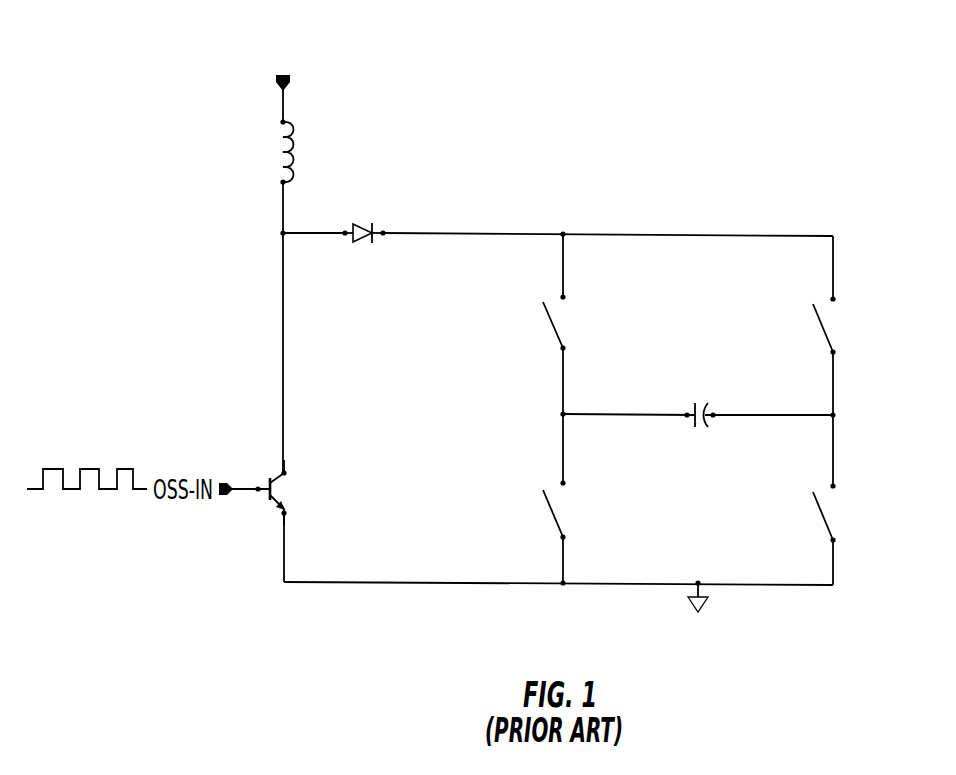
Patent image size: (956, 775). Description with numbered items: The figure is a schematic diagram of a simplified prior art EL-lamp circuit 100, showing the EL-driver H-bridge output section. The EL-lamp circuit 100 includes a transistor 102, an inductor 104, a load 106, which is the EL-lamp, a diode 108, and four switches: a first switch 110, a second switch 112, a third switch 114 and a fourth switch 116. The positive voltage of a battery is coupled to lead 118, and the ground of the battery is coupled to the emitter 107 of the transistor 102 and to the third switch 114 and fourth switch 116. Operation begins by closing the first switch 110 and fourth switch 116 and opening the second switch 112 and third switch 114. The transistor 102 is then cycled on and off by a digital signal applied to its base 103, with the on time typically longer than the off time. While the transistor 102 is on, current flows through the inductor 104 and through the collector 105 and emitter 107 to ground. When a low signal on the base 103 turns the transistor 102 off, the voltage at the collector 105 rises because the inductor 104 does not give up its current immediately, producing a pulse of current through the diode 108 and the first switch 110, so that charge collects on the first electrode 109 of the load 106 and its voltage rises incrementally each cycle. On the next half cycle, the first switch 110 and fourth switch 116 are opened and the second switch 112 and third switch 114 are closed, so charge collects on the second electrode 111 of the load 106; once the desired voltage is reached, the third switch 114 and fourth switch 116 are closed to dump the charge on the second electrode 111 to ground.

The EL-lamp circuit 100 is at (810, 152).
The transistor 102 is at (298, 468).
The base 103 is at (268, 480).
The inductor 104 is at (297, 158).
The collector 105 is at (281, 490).
The load 106 is at (701, 428).
The emitter 107 is at (277, 506).
The diode 108 is at (362, 224).
The first electrode 109 is at (690, 428).
The switch S1 110 is at (570, 298).
The second electrode 111 is at (713, 408).
The switch S2 112 is at (838, 310).
The switch S3 114 is at (565, 500).
The switch S4 116 is at (838, 502).
The lead 118 is at (293, 82).